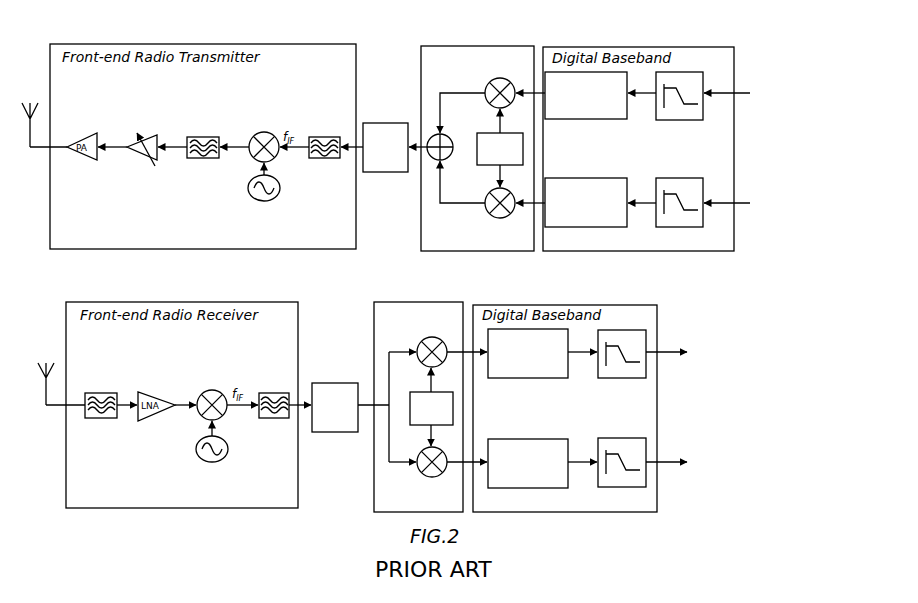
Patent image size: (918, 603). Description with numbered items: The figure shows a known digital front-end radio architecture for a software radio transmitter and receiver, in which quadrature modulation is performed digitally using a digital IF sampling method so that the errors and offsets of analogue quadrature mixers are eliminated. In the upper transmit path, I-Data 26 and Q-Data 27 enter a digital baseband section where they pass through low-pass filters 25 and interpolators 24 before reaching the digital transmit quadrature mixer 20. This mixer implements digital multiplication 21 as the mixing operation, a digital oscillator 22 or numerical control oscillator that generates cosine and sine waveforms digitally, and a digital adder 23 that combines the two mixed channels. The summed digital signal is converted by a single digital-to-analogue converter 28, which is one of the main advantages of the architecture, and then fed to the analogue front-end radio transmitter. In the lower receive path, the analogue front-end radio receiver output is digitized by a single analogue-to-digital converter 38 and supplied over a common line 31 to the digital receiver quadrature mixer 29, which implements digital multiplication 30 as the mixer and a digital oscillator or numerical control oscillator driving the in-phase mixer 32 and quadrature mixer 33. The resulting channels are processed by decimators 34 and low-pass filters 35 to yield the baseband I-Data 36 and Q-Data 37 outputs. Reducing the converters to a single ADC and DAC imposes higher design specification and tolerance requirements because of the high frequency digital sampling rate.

The digital transmit quadrature mixer 20 is at (477, 148).
The digital multiplication 21 is at (503, 100).
The digital oscillator 22 is at (490, 148).
The digital adder 23 is at (437, 156).
The interpolators 24 is at (586, 149).
The low-pass filters (transmitter baseband) 25 is at (679, 149).
The I-Data input 26 is at (749, 103).
The Q-Data input 27 is at (751, 213).
The digital-to-analogue converter 28 is at (385, 158).
The digital receiver quadrature mixer 29 is at (418, 407).
The digital multiplication 30 is at (428, 395).
The digital oscillator 31 is at (383, 407).
The mixer (receiver I channel) 32 is at (442, 353).
The mixer (receiver Q channel) 33 is at (442, 460).
The decimators 34 is at (528, 408).
The low-pass filters (receiver baseband) 35 is at (622, 408).
The I-Data output 36 is at (690, 365).
The Q-Data output 37 is at (692, 474).
The analogue-to-digital converter 38 is at (335, 418).